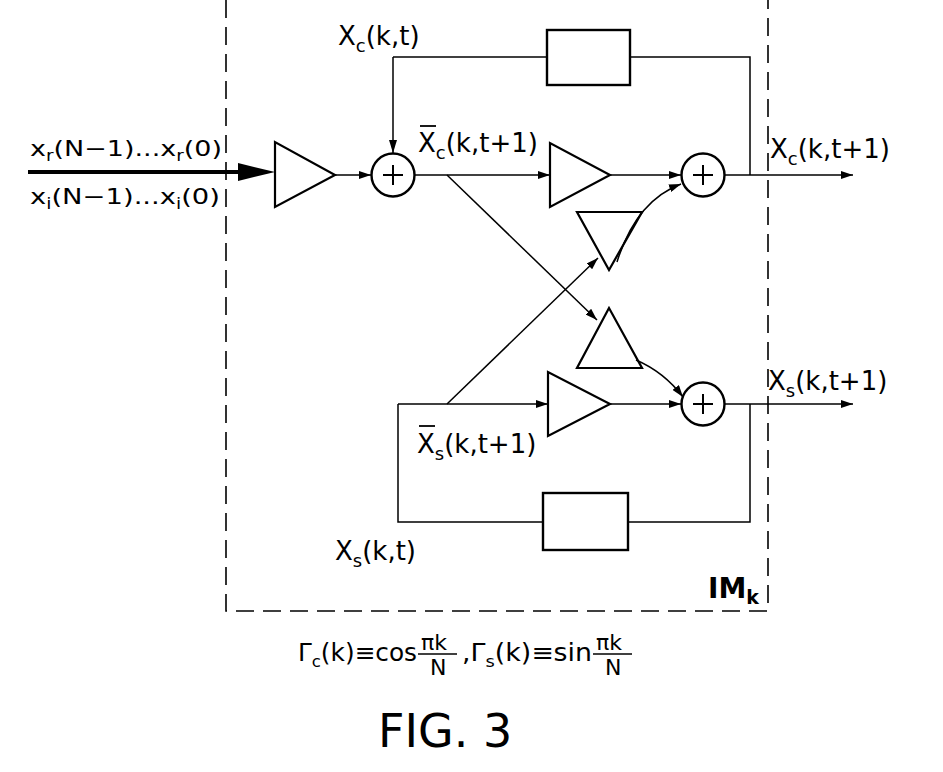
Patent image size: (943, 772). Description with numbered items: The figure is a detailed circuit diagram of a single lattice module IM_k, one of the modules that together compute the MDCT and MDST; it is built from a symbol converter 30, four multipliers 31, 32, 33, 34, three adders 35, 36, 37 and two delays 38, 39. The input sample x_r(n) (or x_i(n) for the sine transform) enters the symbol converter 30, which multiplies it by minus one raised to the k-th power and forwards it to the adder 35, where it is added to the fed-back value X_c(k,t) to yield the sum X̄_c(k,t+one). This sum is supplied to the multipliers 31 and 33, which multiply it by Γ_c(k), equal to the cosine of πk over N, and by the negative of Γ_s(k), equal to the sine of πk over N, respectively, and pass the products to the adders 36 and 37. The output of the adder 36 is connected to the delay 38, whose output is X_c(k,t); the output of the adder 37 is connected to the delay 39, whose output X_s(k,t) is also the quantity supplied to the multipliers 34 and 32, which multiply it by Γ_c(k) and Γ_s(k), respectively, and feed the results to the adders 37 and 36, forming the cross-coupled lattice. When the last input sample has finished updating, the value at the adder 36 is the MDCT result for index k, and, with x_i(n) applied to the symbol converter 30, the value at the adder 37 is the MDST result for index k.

The symbol converter 30 is at (301, 153).
The multiplier 31 is at (550, 196).
The multiplier 32 is at (577, 231).
The multiplier 33 is at (577, 353).
The multiplier 34 is at (548, 389).
The adder 35 is at (393, 197).
The adder 36 is at (702, 153).
The adder 37 is at (702, 426).
The delay 38 is at (572, 30).
The delay 39 is at (570, 550).